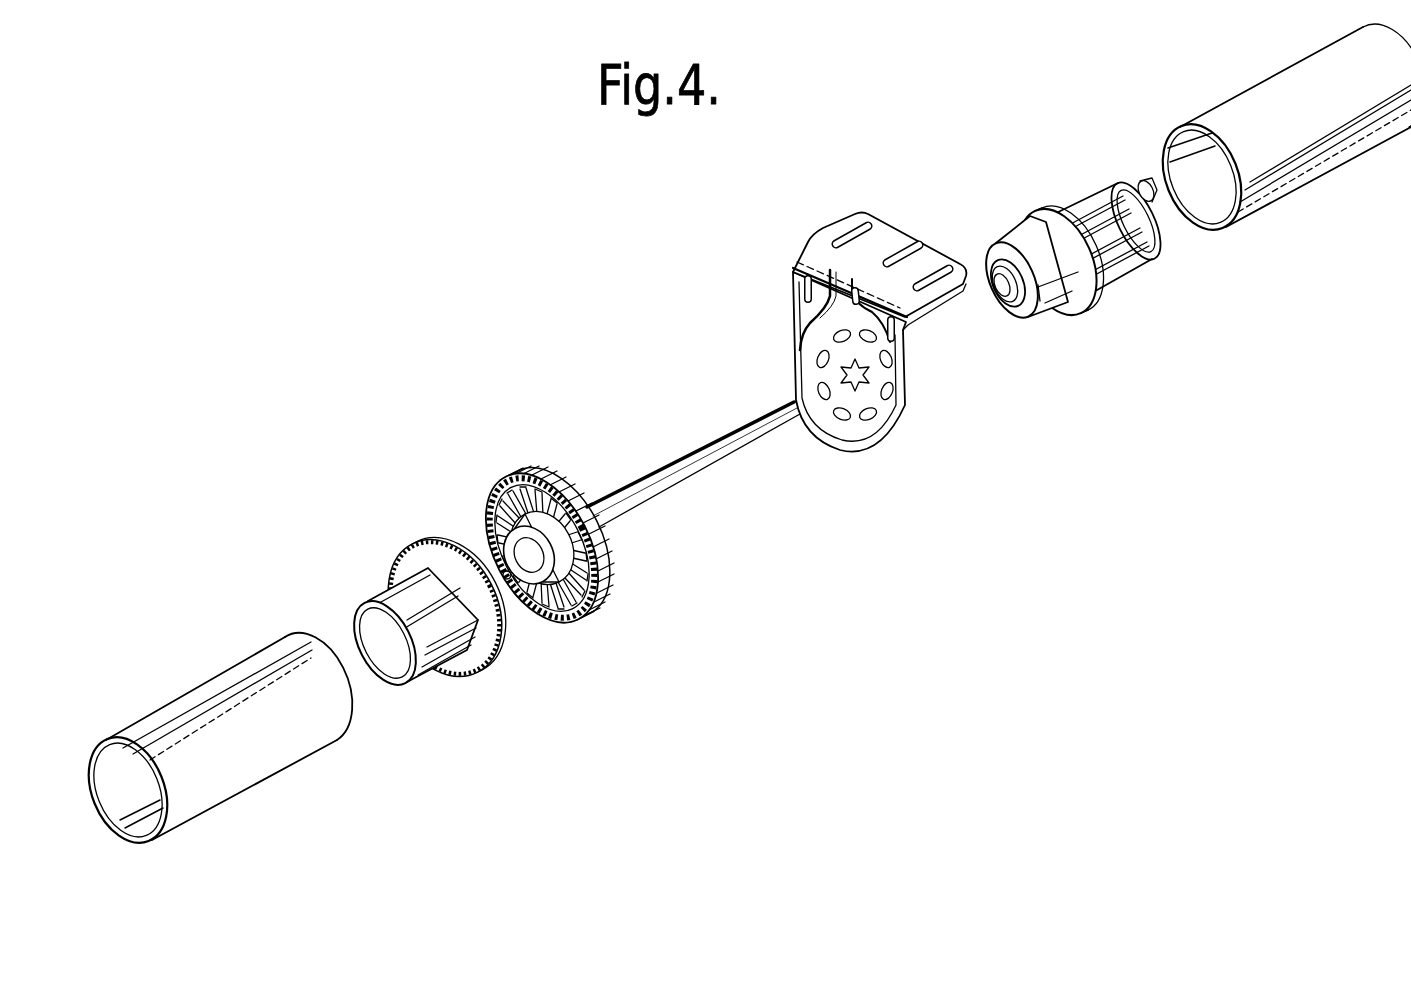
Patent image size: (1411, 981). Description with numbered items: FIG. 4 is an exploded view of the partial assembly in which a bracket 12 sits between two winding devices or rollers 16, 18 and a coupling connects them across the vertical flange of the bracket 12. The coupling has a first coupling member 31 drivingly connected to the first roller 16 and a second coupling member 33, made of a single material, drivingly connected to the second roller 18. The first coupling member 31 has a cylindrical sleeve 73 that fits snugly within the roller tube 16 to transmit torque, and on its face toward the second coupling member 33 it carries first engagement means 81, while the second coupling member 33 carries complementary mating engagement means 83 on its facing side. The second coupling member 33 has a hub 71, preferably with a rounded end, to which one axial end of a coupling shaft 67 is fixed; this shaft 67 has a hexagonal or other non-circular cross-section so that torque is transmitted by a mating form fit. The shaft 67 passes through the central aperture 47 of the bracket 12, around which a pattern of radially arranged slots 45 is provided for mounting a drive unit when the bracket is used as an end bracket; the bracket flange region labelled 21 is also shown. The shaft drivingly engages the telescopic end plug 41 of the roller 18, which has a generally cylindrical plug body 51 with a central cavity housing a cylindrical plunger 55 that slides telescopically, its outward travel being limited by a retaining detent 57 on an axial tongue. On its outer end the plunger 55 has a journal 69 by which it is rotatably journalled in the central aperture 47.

The bracket 12 is at (833, 338).
The winding device or roller 16 is at (257, 747).
The winding device or roller 18 is at (1293, 90).
The bracket flange 21 is at (877, 240).
The first coupling member 31 is at (434, 611).
The second coupling member 33 is at (566, 556).
The end plug 41 is at (1095, 251).
The radially arranged slots 45 is at (900, 398).
The central aperture 47 is at (855, 385).
The plug body 51 is at (1128, 228).
The plunger 55 is at (1062, 307).
The retaining detent 57 is at (1136, 178).
The coupling shaft 67 is at (660, 487).
The journal 69 is at (1023, 313).
The hub 71 is at (524, 575).
The sleeve 73 is at (400, 603).
The first engagement means 81 is at (440, 545).
The second engagement means 83 is at (492, 508).